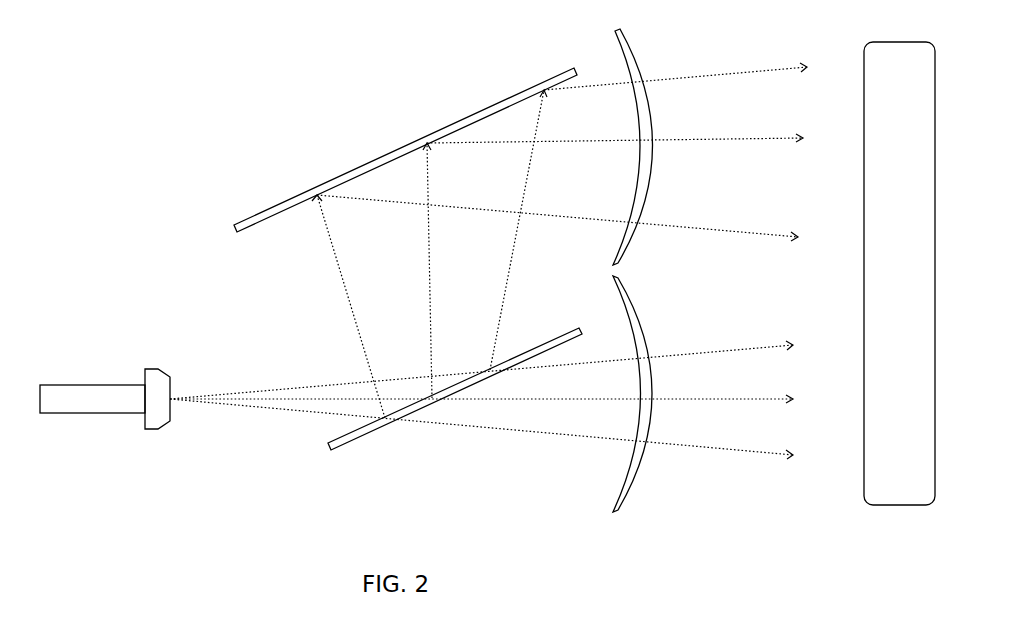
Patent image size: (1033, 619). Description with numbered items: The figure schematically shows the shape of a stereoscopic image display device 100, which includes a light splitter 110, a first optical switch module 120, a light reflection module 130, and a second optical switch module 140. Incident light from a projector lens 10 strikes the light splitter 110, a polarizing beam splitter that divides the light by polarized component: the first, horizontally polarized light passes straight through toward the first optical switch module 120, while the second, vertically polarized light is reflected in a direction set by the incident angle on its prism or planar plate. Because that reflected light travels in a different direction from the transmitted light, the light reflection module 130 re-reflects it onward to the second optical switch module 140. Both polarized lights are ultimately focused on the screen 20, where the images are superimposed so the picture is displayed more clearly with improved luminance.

The stereoscopic image display device 100 is at (82, 41).
The projector lens 10 is at (93, 385).
The screen 20 is at (903, 42).
The light splitter 110 is at (342, 447).
The first optical switch module 120 is at (613, 510).
The light reflection module 130 is at (410, 145).
The second optical switch module 140 is at (614, 32).